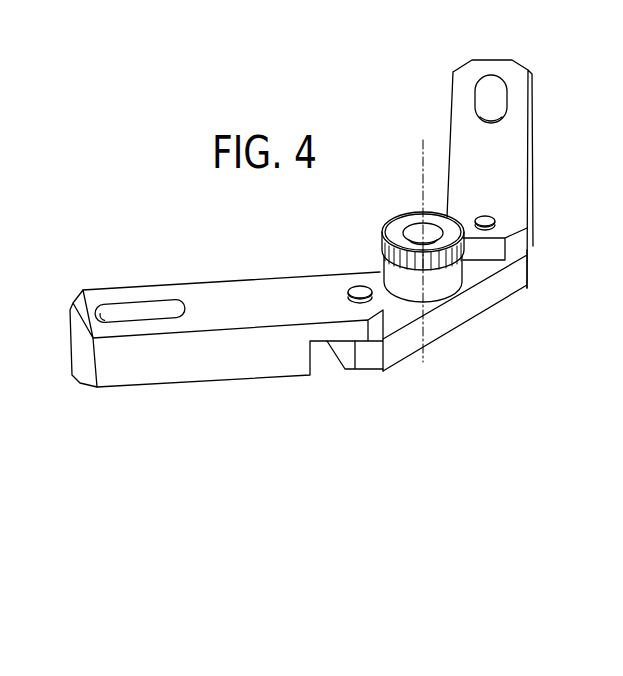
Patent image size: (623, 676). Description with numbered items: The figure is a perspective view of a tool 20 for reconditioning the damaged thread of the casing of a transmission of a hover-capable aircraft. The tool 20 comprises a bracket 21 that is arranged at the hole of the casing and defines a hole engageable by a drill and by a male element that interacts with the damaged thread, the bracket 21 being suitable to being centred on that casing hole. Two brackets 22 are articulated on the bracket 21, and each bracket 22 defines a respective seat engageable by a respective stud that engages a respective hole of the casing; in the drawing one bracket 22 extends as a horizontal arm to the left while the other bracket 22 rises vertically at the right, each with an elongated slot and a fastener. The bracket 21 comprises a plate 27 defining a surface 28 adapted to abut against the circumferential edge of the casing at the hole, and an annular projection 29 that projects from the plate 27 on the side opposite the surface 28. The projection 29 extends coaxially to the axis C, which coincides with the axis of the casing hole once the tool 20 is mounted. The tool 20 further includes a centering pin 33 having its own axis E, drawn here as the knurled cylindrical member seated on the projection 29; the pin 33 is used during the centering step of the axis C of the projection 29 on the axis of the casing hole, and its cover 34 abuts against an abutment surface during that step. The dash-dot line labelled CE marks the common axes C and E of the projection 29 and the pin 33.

The tool 20 is at (437, 366).
The bracket 21 is at (488, 290).
The brackets 22 is at (257, 348).
The plate 27 is at (367, 355).
The surface 28 is at (460, 345).
The annular projection 29 is at (384, 273).
The centering pin 33 is at (370, 227).
The cover 34 is at (452, 232).
The axes C and E CE is at (423, 186).